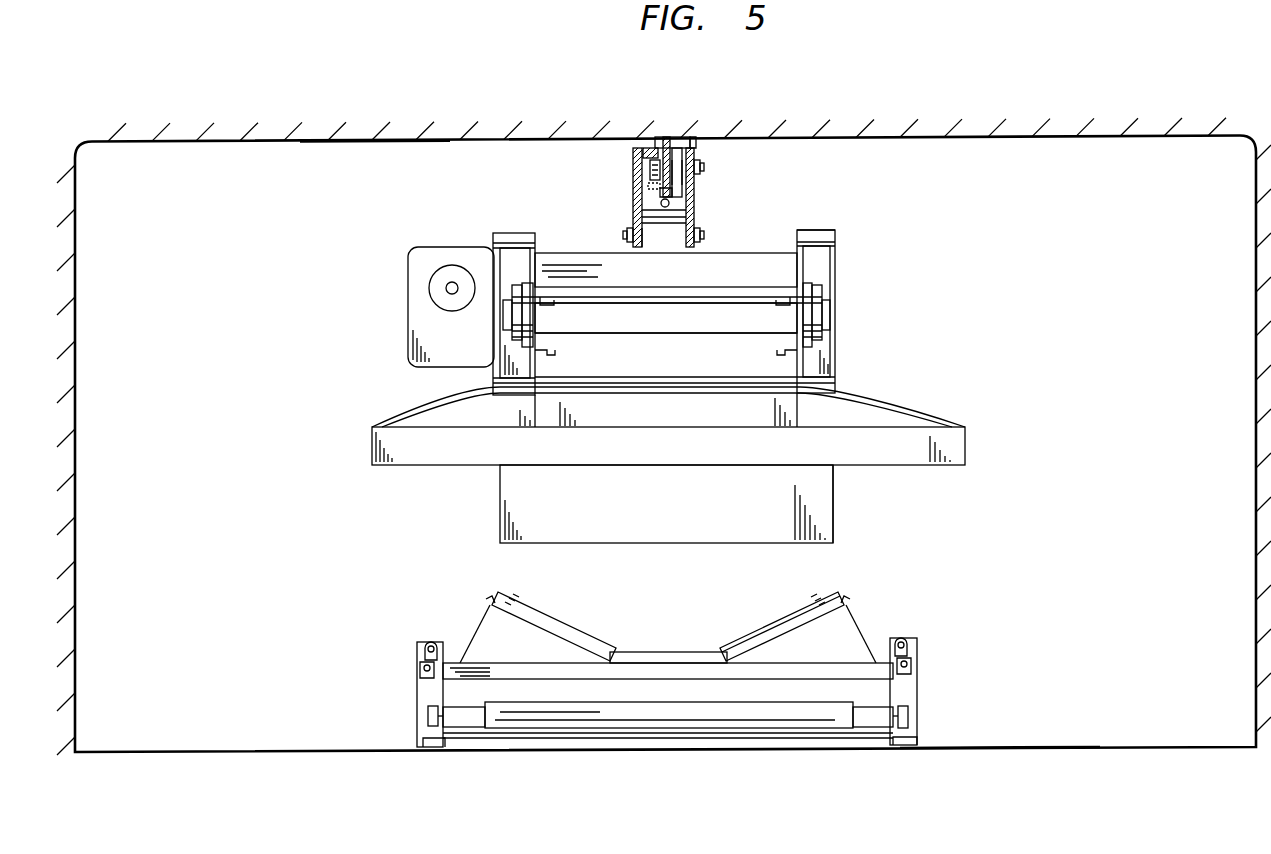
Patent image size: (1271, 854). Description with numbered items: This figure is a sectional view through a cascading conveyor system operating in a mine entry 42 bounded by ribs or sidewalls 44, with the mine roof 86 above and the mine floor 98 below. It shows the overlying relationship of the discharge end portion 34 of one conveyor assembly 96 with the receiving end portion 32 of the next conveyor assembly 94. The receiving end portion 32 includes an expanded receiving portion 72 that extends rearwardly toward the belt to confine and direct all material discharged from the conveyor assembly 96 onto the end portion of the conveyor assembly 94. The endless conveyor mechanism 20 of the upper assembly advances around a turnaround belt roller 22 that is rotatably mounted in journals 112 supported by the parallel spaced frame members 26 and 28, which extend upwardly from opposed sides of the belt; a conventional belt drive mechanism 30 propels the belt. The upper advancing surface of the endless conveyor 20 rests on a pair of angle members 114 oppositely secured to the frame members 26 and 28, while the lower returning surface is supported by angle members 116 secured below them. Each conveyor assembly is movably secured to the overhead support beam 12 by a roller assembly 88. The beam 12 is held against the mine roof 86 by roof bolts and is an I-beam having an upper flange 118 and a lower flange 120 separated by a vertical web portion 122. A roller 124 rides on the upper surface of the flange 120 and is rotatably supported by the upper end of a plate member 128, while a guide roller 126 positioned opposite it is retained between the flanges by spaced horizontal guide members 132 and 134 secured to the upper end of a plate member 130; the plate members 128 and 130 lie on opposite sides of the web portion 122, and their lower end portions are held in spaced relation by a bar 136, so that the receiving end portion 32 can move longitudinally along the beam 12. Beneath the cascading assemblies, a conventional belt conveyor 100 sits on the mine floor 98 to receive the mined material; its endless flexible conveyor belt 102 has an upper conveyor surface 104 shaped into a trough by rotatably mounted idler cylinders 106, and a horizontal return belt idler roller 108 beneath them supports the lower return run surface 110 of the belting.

The overhead support beam 12 is at (690, 140).
The endless conveyor mechanism 20 is at (725, 288).
The turnaround belt roller 22 is at (660, 334).
The frame member 26 is at (825, 230).
The frame member 28 is at (503, 232).
The belt drive mechanism 30 is at (408, 265).
The receiving end portion 32 is at (680, 512).
The discharge end portion 34 is at (676, 279).
The entry 42 is at (1032, 255).
The ribs or sidewalls 44 is at (1256, 263).
The expanded receiving portion 72 is at (385, 420).
The mine roof 86 is at (378, 145).
The roller assembly 88 is at (630, 175).
The conveyor assembly 94 is at (843, 501).
The conveyor assembly 96 is at (850, 247).
The mine floor 98 is at (1005, 750).
The belt conveyor 100 is at (880, 618).
The endless flexible conveyor belt 102 is at (790, 612).
The upper conveyor surface 104 is at (672, 652).
The idler cylinders 106 is at (800, 640).
The return belt idler roller 108 is at (878, 714).
The return run surface 110 is at (690, 706).
The journals 112 is at (510, 313).
The angle members 114 is at (553, 305).
The angle members 116 is at (553, 353).
The upper flange 118 is at (668, 140).
The lower flange 120 is at (660, 204).
The vertical web portion 122 is at (680, 170).
The roller 124 is at (682, 192).
The guide roller 126 is at (650, 168).
The plate member 128 is at (692, 212).
The plate member 130 is at (628, 228).
The horizontal guide member 132 is at (648, 148).
The horizontal guide member 134 is at (650, 188).
The bar 136 is at (663, 214).